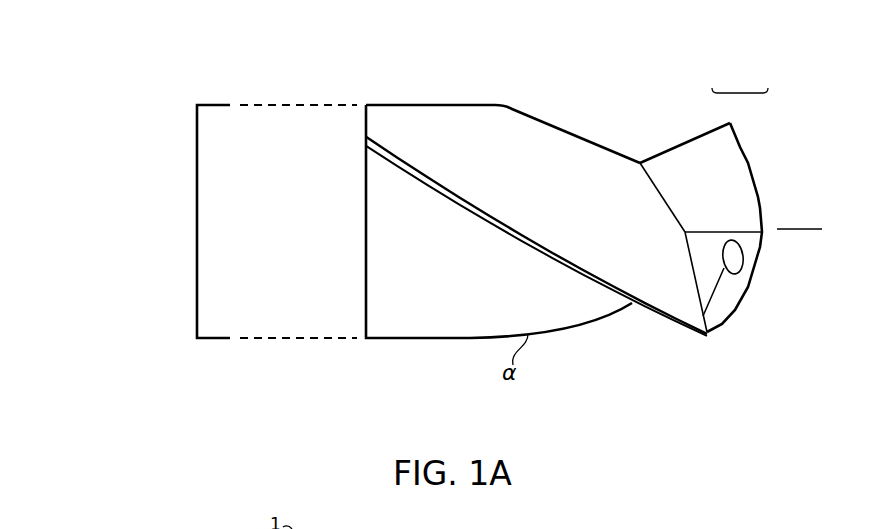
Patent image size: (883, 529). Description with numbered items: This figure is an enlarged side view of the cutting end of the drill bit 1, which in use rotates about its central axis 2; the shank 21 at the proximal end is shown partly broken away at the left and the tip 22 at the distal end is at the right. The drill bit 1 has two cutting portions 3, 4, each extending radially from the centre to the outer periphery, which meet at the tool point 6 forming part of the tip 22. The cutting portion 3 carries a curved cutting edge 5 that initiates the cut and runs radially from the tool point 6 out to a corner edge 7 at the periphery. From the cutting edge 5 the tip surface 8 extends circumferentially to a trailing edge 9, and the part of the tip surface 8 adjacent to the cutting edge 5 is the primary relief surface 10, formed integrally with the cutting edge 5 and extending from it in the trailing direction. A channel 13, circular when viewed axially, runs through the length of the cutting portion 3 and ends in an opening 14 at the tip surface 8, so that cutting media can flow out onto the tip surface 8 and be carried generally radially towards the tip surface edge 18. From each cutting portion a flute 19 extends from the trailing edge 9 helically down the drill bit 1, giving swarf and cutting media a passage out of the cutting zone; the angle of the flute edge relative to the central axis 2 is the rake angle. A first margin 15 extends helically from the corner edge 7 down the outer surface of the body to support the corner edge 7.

The drill bit 1 is at (445, 104).
The central axis 2 is at (810, 228).
The cutting portion 3 is at (748, 274).
The cutting portion 4 is at (745, 147).
The cutting edge 5 is at (752, 287).
The tool point 6 is at (763, 231).
The corner edge 7 is at (723, 305).
The tip surface 8 is at (705, 333).
The trailing edge 9 is at (740, 238).
The primary relief surface 10 is at (753, 247).
The channel 13 is at (752, 290).
The opening 14 is at (733, 275).
The first margin 15 is at (648, 306).
The tip surface edge 18 is at (636, 303).
The flute 19 is at (562, 158).
The shank 21 is at (215, 104).
The tip 22 is at (741, 92).